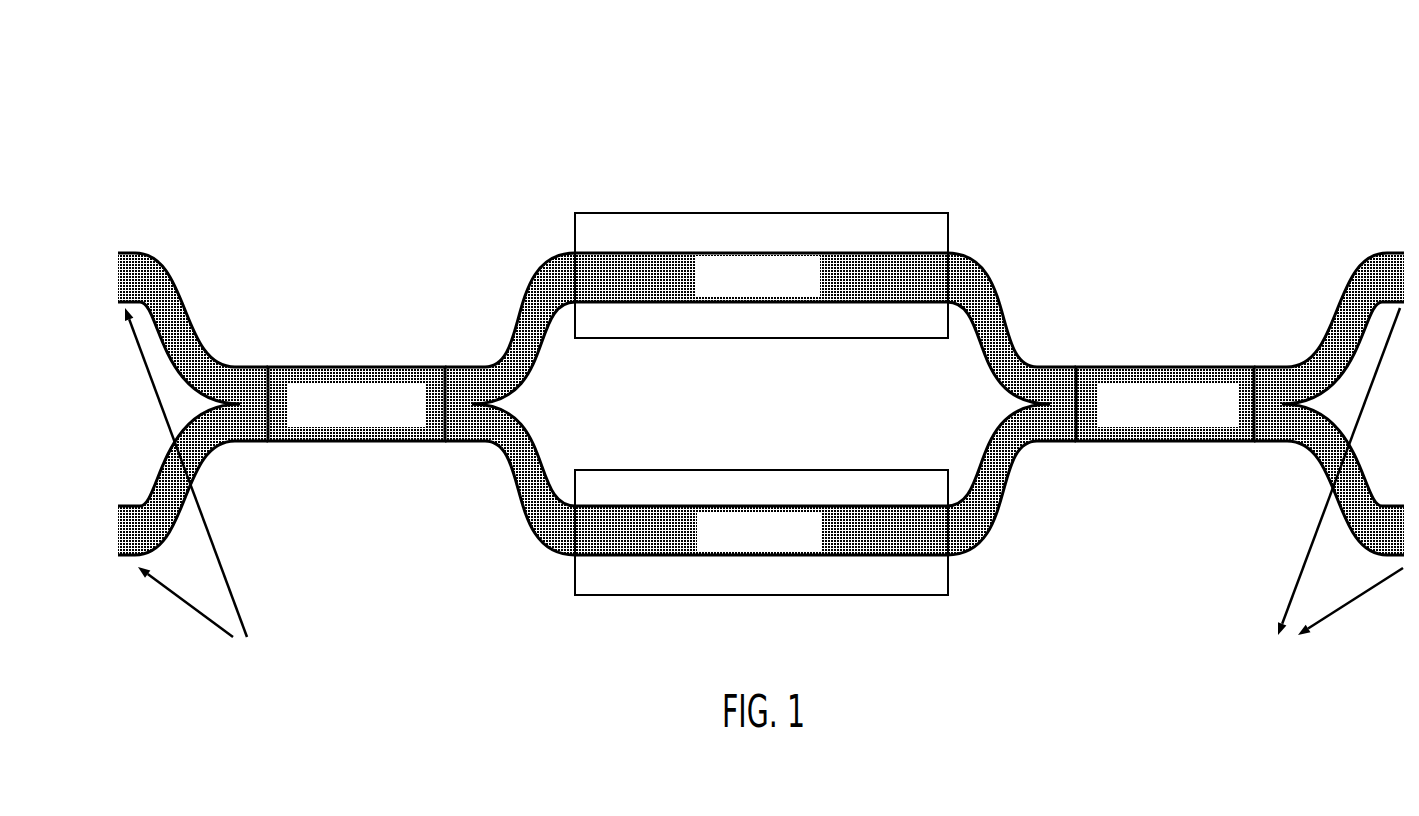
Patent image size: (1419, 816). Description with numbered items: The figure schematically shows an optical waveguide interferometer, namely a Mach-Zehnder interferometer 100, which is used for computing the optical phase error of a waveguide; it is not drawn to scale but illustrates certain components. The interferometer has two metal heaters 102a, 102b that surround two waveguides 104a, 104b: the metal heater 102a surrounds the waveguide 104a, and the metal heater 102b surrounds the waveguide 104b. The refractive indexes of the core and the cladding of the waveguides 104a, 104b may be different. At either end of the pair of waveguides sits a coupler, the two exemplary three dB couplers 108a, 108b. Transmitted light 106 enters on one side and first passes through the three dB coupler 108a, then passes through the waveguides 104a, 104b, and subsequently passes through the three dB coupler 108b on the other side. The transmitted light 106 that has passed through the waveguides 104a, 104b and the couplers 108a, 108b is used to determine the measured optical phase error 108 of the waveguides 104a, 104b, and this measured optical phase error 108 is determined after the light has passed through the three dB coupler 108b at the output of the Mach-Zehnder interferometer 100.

The Mach-Zehnder interferometer 100 is at (633, 86).
The metal heater 102a is at (612, 213).
The metal heater 102b is at (612, 470).
The waveguide 104a is at (808, 257).
The waveguide 104b is at (722, 545).
The transmitted light 106 is at (276, 693).
The measured optical phase error 108 is at (1220, 668).
The 3 dB coupler 108a is at (338, 393).
The 3 dB coupler 108b is at (1147, 393).